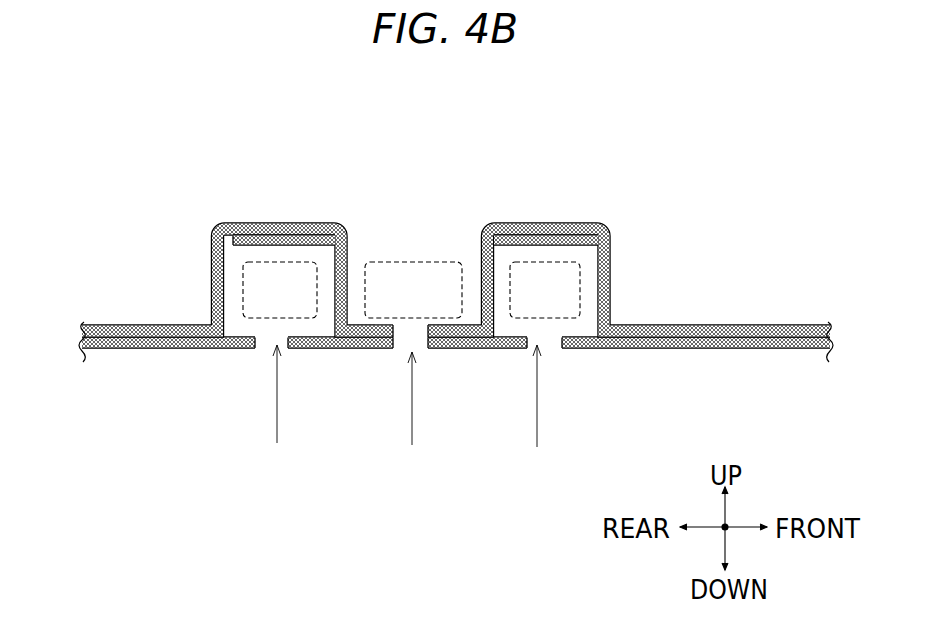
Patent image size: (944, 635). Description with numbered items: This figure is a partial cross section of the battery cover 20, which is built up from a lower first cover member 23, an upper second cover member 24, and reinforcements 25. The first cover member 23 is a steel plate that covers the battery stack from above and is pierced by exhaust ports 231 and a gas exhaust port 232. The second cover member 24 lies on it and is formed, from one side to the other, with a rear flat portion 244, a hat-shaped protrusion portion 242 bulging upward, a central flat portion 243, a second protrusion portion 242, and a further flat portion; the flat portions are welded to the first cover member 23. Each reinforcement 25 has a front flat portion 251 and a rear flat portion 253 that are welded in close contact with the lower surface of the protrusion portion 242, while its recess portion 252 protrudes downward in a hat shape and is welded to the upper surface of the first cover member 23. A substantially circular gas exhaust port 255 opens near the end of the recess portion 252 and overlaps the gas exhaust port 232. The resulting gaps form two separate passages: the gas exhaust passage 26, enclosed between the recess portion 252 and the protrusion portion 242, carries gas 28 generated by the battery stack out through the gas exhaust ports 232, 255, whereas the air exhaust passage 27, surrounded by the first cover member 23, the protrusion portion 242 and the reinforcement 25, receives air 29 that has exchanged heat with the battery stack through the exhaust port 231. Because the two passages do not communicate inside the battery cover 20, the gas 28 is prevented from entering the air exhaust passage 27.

The battery cover 20 is at (455, 132).
The first cover member 23 is at (706, 350).
The second cover member 24 is at (786, 325).
The reinforcement 25 is at (343, 230).
The gas exhaust passage 26 is at (408, 258).
The air exhaust passage 27 is at (280, 221).
The gas 28 is at (410, 442).
The air 29 is at (275, 437).
The exhaust port 231 is at (264, 346).
The gas exhaust port 232 is at (422, 348).
The protrusion portion 242 is at (211, 250).
The central flat portion 243 is at (683, 325).
The rear flat portion 244 is at (143, 323).
The front flat portion 251 is at (513, 258).
The recess portion 252 is at (346, 350).
The rear flat portion 253 is at (313, 248).
The gas exhaust port 255 is at (400, 348).